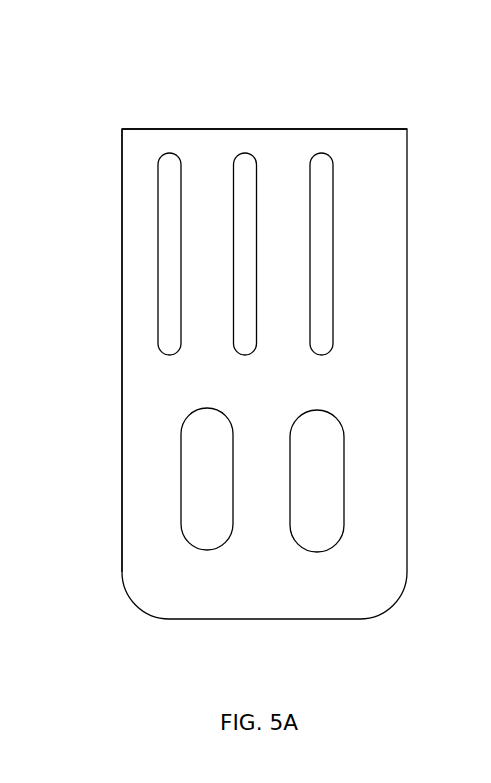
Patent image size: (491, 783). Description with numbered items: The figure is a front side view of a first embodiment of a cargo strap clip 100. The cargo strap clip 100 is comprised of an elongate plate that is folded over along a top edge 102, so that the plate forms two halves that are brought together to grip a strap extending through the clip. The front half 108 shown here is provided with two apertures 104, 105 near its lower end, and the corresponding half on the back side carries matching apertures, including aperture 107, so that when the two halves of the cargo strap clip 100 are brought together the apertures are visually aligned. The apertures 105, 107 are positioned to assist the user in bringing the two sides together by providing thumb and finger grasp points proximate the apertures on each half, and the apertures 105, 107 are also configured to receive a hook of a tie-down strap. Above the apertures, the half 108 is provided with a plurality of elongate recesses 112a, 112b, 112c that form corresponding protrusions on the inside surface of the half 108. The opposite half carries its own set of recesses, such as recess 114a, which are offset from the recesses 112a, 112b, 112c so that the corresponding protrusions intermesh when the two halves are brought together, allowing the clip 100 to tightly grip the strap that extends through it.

The cargo strap clip 100 is at (337, 102).
The top edge 102 is at (138, 128).
The aperture 104 is at (181, 500).
The aperture 105 is at (344, 482).
The aperture 107 is at (490, 497).
The half 108 is at (122, 389).
The recess 112a is at (158, 240).
The recess 112b is at (258, 197).
The recess 112c is at (333, 215).
The recess 114a is at (490, 278).